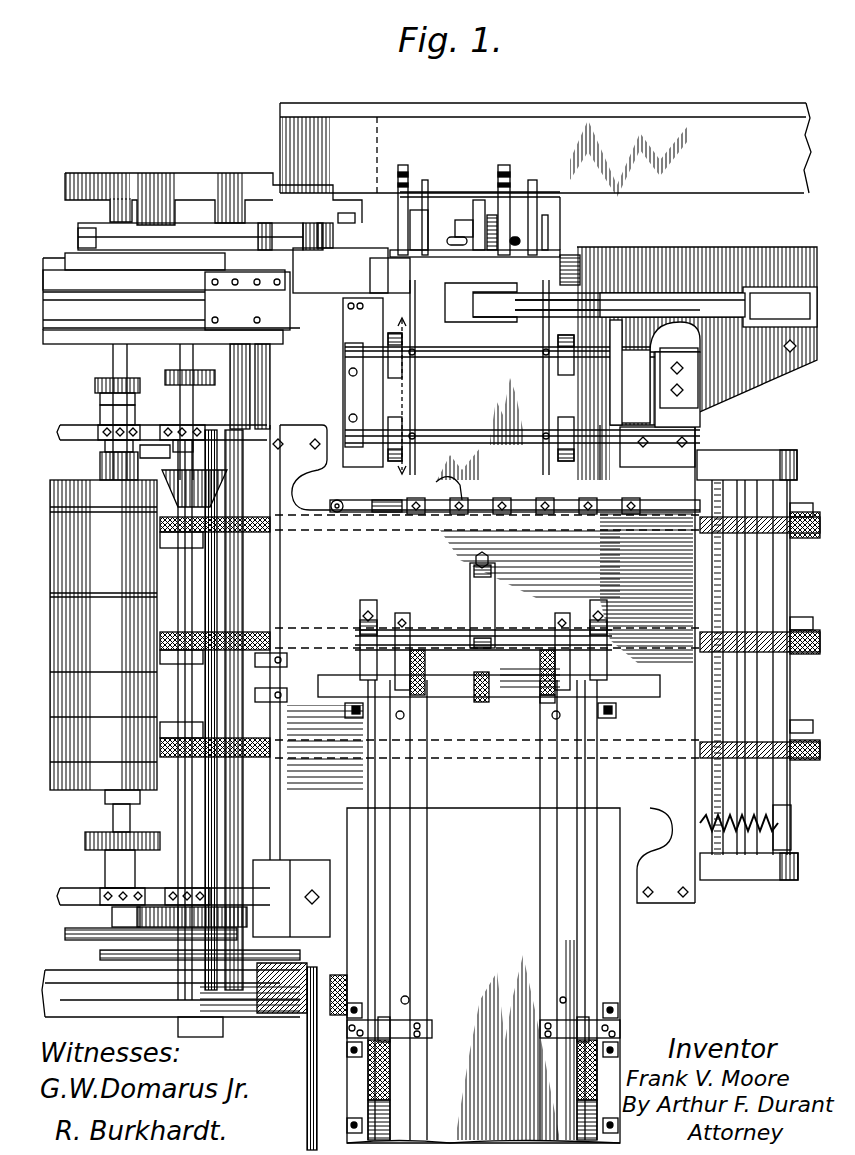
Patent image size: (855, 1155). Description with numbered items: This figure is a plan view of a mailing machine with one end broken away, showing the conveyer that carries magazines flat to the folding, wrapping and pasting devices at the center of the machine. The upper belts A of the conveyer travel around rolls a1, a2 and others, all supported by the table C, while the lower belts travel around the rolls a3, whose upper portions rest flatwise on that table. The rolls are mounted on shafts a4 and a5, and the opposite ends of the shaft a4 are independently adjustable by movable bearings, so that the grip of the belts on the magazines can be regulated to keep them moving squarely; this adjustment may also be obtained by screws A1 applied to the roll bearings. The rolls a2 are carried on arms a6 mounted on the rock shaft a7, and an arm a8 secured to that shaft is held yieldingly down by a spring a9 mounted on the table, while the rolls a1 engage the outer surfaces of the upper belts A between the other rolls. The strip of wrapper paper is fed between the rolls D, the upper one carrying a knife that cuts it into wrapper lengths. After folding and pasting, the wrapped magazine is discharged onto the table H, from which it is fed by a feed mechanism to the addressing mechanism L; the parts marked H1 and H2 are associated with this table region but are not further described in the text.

The rolls D is at (103, 635).
The addressing mechanism L is at (446, 300).
The table H is at (521, 380).
The frame bearing blocks H1 is at (570, 395).
The frame link H2 is at (438, 472).
The table C is at (520, 500).
The rolls a1 is at (288, 523).
The rolls a2 is at (428, 670).
The rolls a3 is at (545, 672).
The shaft a4 is at (530, 670).
The shaft a5 is at (514, 690).
The arms a6 is at (380, 650).
The rock shaft a7 is at (447, 640).
The arm a8 is at (476, 600).
The spring a9 is at (470, 556).
The upper belts A is at (432, 758).
The screws A1 is at (545, 790).